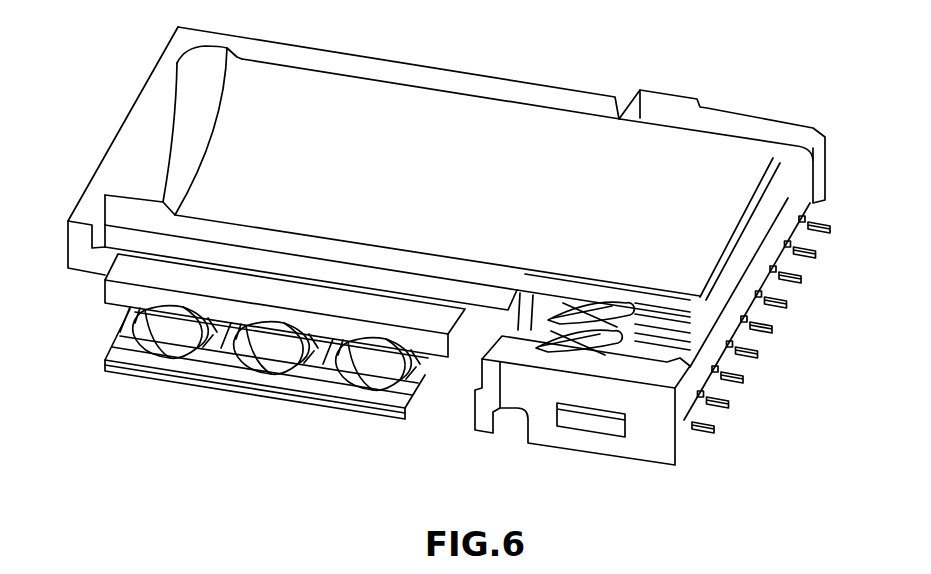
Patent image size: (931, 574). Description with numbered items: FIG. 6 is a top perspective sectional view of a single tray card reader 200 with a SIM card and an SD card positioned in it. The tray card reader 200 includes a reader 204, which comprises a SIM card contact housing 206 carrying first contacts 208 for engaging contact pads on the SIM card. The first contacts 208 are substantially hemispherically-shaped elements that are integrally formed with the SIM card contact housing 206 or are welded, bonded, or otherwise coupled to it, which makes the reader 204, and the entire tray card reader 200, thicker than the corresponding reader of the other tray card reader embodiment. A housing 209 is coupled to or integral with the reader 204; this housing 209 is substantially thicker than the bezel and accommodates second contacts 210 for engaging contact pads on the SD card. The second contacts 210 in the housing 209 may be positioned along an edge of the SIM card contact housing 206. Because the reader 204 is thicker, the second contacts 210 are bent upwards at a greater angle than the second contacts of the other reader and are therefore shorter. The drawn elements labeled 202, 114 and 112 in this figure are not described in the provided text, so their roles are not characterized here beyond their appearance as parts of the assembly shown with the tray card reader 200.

The tray card reader 200 is at (676, 60).
The lid 202 is at (140, 89).
The window 114 is at (545, 117).
The lens plate 112 is at (120, 308).
The SIM card contact housing 206 is at (218, 375).
The first contacts 208 is at (355, 360).
The reader 204 is at (541, 460).
The second contacts 210 is at (622, 316).
The housing 209 is at (667, 460).